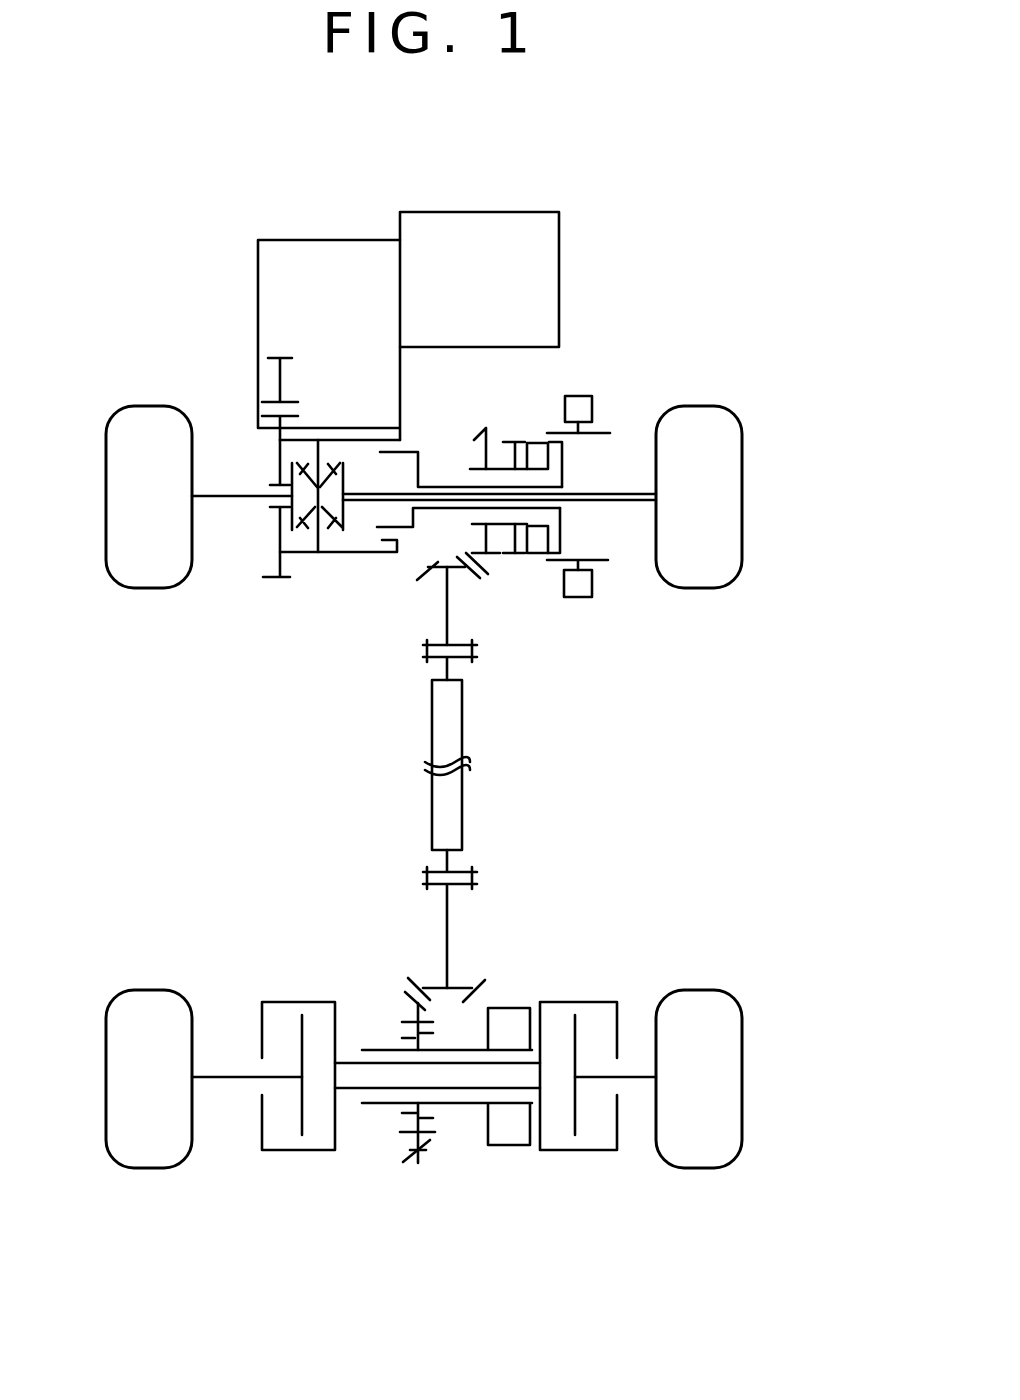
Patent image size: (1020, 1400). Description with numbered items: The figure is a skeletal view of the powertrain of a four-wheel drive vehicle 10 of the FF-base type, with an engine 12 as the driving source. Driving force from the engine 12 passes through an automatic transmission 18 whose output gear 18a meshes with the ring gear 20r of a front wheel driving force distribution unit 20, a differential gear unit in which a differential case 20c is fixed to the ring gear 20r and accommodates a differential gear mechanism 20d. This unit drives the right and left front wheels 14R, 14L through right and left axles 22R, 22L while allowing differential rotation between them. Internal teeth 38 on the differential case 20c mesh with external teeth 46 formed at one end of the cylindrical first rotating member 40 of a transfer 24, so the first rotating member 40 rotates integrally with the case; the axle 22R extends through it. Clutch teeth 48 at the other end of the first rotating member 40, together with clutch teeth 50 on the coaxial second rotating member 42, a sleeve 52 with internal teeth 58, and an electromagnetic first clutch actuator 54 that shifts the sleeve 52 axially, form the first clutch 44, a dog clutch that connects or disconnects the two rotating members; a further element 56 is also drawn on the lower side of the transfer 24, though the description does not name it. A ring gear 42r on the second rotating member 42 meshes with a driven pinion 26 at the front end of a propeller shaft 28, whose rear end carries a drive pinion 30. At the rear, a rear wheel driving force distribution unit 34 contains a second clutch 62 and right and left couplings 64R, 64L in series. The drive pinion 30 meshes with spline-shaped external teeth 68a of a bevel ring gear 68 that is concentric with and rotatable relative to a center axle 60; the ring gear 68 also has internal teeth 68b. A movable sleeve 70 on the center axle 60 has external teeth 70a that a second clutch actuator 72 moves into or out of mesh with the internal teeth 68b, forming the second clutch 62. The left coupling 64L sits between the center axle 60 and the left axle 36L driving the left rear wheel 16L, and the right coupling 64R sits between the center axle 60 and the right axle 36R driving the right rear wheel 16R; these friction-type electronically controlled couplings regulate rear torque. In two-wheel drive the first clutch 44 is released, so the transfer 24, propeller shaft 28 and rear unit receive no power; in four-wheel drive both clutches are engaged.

The four-wheel drive vehicle 10 is at (618, 148).
The engine 12 is at (502, 232).
The automatic transmission 18 is at (328, 255).
The output gear 18a is at (270, 396).
The left front wheel 14L is at (150, 410).
The right front wheel 14R is at (702, 410).
The left rear wheel 16L is at (150, 1168).
The right rear wheel 16R is at (702, 1168).
The left axle 22L is at (226, 500).
The right axle 22R is at (624, 502).
The front wheel driving force distribution unit 20 is at (262, 684).
The differential case 20c is at (342, 554).
The differential gear mechanism 20d is at (306, 542).
The ring gear 20r is at (274, 580).
The internal teeth 38 is at (428, 454).
The external teeth 46 is at (384, 455).
The first rotating member 40 is at (450, 484).
The second rotating member 42 is at (497, 440).
The ring gear 42r is at (472, 565).
The clutch teeth 48 is at (570, 442).
The clutch teeth 50 is at (524, 442).
The sleeve 52 is at (598, 432).
The first clutch actuator 54 is at (586, 395).
The internal teeth 58 is at (600, 434).
The actuator 56 is at (534, 550).
The first clutch 44 is at (536, 606).
The transfer 24 is at (512, 630).
The driven pinion 26 is at (422, 652).
The propeller shaft 28 is at (462, 790).
The drive pinion 30 is at (448, 908).
The rear wheel driving force distribution unit 34 is at (256, 892).
The second clutch 62 is at (378, 946).
The center axle 60 is at (460, 1062).
The left axle 36L is at (222, 1072).
The right axle 36R is at (630, 1072).
The left coupling 64L is at (284, 1160).
The right coupling 64R is at (580, 1160).
The second clutch actuator 72 is at (510, 1146).
The movable sleeve 70 is at (478, 1106).
The external teeth 70a is at (402, 1134).
The ring gear 68 is at (412, 1142).
The external teeth 68a is at (414, 1165).
The internal teeth 68b is at (440, 1134).